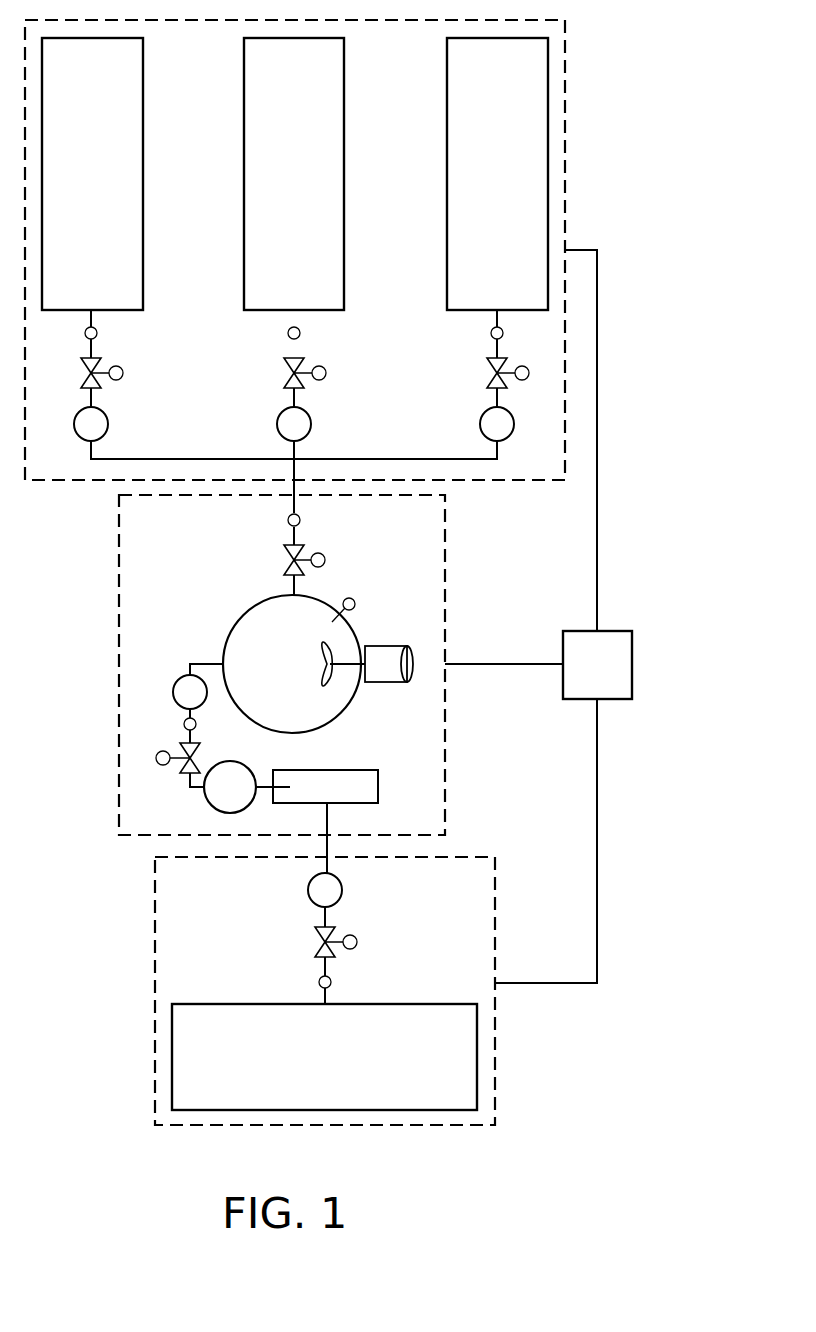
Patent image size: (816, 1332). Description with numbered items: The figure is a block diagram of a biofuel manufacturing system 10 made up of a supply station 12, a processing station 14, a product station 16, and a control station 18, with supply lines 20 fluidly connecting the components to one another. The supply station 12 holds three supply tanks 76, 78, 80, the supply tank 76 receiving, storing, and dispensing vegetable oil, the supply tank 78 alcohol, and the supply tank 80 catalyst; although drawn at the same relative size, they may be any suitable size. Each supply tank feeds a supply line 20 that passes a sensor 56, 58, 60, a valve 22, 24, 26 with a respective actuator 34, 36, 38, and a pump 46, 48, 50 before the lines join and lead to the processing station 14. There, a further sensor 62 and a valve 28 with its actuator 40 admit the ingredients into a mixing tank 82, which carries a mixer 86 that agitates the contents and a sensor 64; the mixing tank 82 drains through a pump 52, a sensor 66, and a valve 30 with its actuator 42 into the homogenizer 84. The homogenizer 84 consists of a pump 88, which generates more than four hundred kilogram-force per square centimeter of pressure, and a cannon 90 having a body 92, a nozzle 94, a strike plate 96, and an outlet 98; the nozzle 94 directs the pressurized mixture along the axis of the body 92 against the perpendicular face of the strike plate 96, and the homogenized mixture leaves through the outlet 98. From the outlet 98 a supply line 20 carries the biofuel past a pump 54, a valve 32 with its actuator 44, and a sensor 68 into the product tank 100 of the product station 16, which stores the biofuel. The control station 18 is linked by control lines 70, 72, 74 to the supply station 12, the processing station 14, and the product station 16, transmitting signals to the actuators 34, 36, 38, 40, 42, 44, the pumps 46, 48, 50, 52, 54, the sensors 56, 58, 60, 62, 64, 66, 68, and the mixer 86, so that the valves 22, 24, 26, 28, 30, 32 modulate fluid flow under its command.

The biofuel manufacturing system 10 is at (687, 40).
The supply station 12 is at (567, 104).
The processing station 14 is at (445, 757).
The product station 16 is at (495, 1060).
The control station 18 is at (632, 664).
The supply lines 20 is at (194, 480).
The valve 22 is at (84, 373).
The valve 24 is at (287, 373).
The valve 26 is at (490, 373).
The valve 28 is at (286, 560).
The valve 30 is at (180, 786).
The valve 32 is at (318, 942).
The actuator 34 is at (123, 373).
The actuator 36 is at (326, 373).
The actuator 38 is at (529, 373).
The actuator 40 is at (325, 560).
The actuator 42 is at (156, 758).
The actuator 44 is at (357, 942).
The pump 46 is at (108, 424).
The pump 48 is at (311, 424).
The pump 50 is at (514, 424).
The pump 52 is at (173, 692).
The pump 54 is at (342, 890).
The sensor 56 is at (98, 333).
The sensor 58 is at (301, 333).
The sensor 60 is at (490, 333).
The sensor 62 is at (301, 520).
The sensor 64 is at (355, 604).
The sensor 66 is at (184, 724).
The sensor 68 is at (331, 982).
The control line 70 is at (597, 520).
The control line 72 is at (525, 664).
The control line 74 is at (597, 850).
The supply tank 76 is at (144, 76).
The supply tank 78 is at (244, 272).
The supply tank 80 is at (447, 272).
The mixing tank 82 is at (333, 712).
The homogenizer 84 is at (372, 748).
The mixer 86 is at (413, 664).
The pump 88 is at (250, 802).
The cannon 90 is at (399, 781).
The body 92 is at (340, 805).
The nozzle 94 is at (285, 787).
The strike plate 96 is at (378, 787).
The outlet 98 is at (327, 796).
The product tank 100 is at (208, 1004).